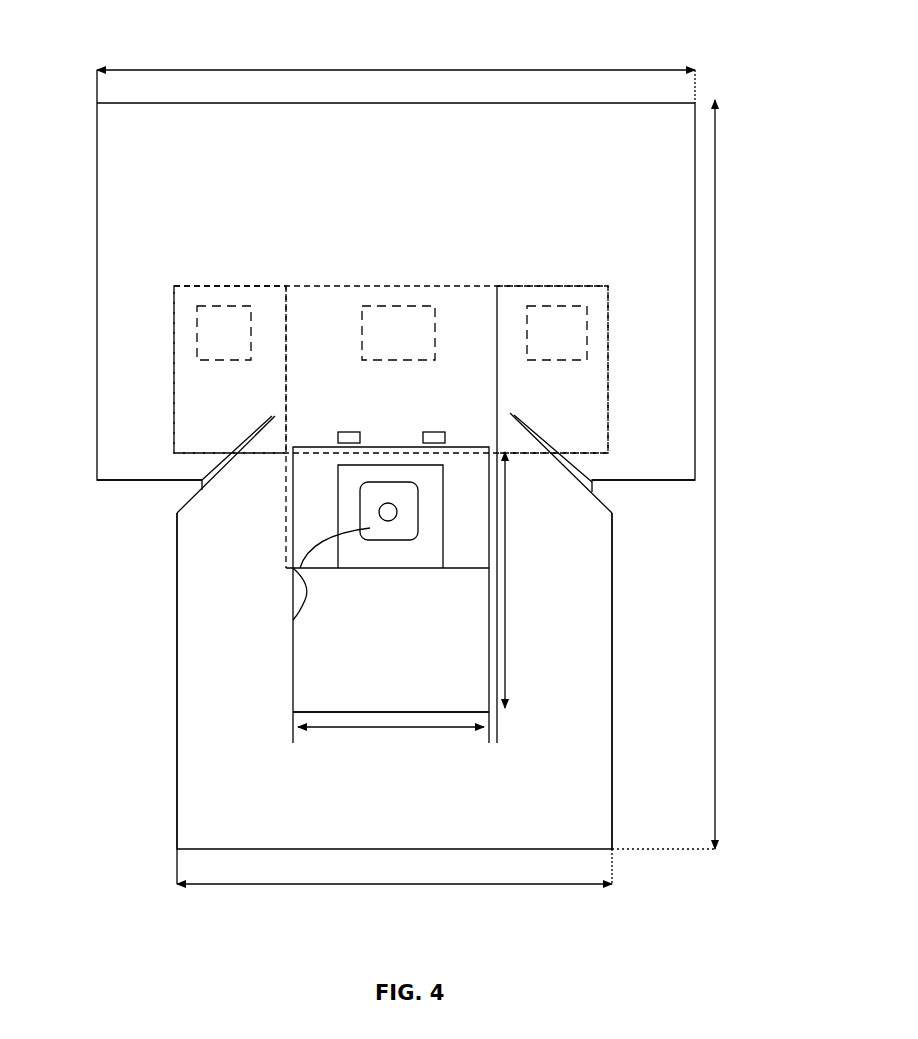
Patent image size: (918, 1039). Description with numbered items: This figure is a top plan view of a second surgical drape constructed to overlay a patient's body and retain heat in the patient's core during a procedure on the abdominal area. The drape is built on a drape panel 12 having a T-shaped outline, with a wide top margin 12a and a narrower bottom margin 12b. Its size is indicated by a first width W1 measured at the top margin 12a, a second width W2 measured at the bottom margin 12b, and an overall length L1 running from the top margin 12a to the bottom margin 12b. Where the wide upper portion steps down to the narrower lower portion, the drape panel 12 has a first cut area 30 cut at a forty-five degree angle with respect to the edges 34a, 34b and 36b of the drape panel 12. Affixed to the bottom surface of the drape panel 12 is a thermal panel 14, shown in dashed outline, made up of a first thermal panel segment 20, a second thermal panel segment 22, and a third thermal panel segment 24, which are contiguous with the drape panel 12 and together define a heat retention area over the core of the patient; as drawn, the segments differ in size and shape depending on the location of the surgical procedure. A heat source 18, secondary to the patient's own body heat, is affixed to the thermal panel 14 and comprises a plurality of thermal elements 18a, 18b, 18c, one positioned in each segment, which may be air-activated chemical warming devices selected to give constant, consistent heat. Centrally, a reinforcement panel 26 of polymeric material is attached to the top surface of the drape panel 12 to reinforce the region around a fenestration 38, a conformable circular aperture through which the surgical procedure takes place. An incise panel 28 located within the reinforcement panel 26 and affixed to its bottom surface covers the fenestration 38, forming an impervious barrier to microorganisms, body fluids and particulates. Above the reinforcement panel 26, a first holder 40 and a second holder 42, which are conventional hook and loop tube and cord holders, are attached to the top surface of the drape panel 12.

The drape panel 12 is at (405, 434).
The top margin 12a is at (578, 103).
The bottom margin 12b is at (390, 848).
The thermal panel 14 is at (553, 270).
The heat source 18 is at (392, 288).
The thermal element 18a is at (224, 333).
The thermal element 18b is at (398, 333).
The thermal element 18c is at (557, 333).
The first thermal panel segment 20 is at (240, 395).
The second thermal panel segment 22 is at (345, 375).
The third thermal panel segment 24 is at (590, 395).
The reinforcement panel 26 is at (312, 685).
The incise panel 28 is at (293, 620).
The first cut area 30 is at (188, 505).
The edge 34a is at (112, 483).
The edge 34b is at (672, 497).
The edge 36b is at (177, 623).
The fenestration 38 is at (390, 514).
The first holder 40 is at (346, 432).
The second holder 42 is at (438, 432).
The first width W1 is at (330, 70).
The second width W2 is at (250, 885).
The overall length L1 is at (716, 548).